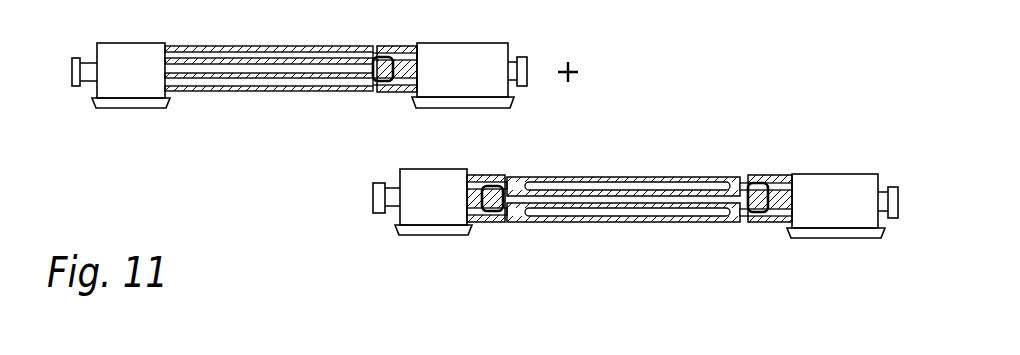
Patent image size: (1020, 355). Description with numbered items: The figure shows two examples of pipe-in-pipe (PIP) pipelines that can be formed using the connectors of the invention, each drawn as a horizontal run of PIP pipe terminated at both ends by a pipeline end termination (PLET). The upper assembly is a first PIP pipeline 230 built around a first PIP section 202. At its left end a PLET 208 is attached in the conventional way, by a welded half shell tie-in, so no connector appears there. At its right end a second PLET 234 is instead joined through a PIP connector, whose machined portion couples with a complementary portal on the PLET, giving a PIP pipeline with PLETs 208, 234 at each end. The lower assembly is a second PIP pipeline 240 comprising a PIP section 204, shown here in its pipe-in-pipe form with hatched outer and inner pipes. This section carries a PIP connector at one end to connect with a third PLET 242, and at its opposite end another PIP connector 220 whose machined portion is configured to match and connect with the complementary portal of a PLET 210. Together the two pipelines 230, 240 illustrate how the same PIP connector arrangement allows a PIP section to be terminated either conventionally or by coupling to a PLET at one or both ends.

The first PIP section 202 is at (267, 100).
The second PIP section 204 is at (688, 177).
The PLET 208 is at (125, 108).
The PLET 210 is at (841, 240).
The PIP connector 220 is at (760, 212).
The first PIP pipeline 230 is at (189, 116).
The second PLET 234 is at (481, 43).
The second PIP pipeline 240 is at (598, 255).
The third PLET 242 is at (430, 236).